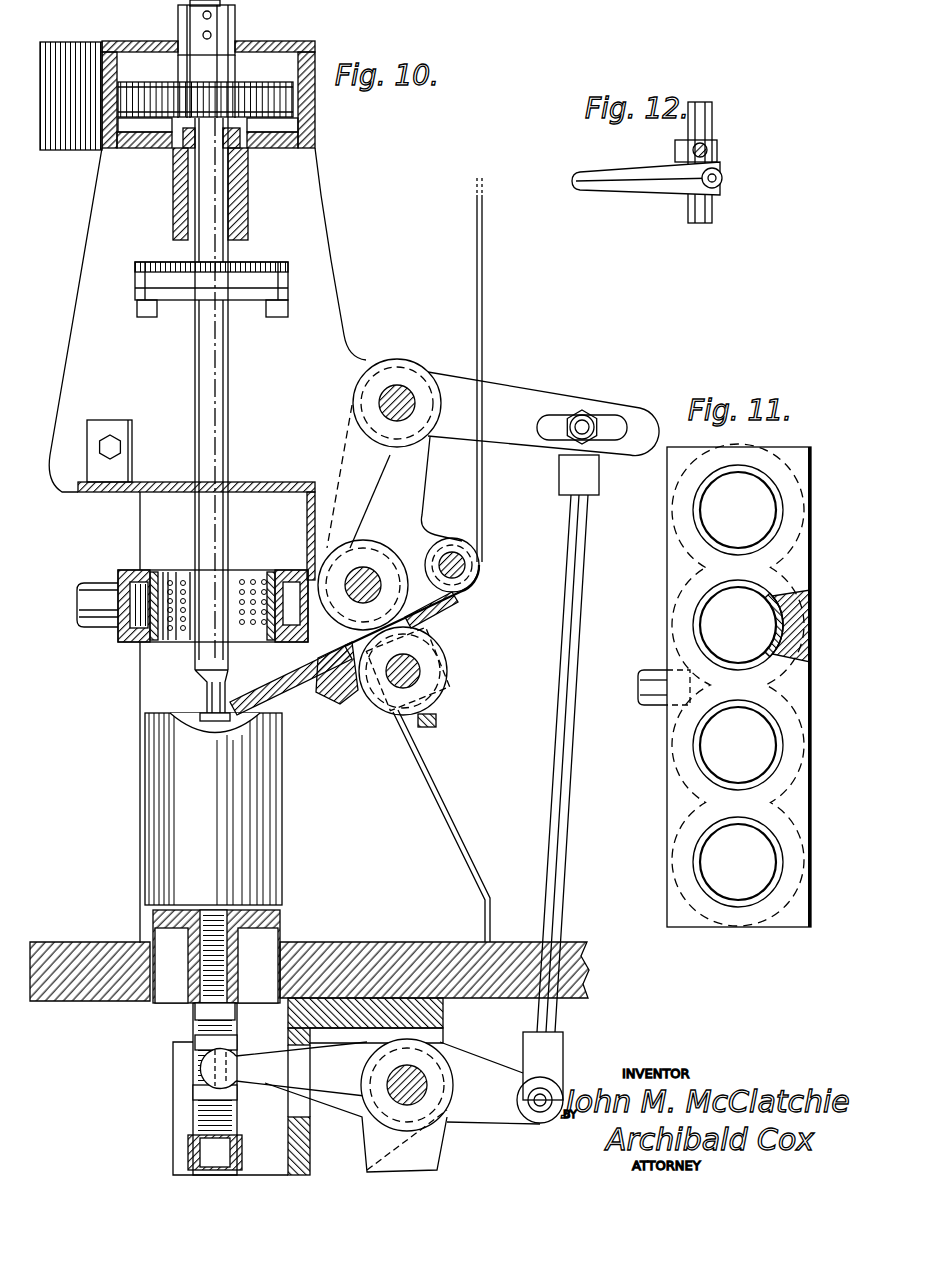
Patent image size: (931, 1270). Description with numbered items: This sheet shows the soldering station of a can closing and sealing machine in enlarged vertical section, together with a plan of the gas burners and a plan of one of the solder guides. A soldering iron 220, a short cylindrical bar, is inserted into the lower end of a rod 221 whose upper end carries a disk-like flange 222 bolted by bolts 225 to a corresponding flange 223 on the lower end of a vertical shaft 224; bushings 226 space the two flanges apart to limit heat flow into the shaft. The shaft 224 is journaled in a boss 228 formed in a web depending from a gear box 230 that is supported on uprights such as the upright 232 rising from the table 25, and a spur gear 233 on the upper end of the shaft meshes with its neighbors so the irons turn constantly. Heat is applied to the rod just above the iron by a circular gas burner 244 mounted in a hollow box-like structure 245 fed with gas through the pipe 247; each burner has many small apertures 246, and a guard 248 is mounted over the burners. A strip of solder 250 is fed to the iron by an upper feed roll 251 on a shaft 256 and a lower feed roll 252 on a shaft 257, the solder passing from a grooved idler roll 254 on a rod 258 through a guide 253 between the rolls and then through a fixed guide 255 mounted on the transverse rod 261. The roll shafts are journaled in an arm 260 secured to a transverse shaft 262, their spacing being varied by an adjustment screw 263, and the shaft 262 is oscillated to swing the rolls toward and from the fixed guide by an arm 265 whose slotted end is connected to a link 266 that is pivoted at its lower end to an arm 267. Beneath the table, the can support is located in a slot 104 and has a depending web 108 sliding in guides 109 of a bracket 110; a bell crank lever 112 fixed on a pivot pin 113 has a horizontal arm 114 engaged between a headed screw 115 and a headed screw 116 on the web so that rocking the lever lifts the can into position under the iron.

In FIG. 10, the spur gear 233 is at (318, 68).
In FIG. 10, the gear box 230 is at (318, 132).
In FIG. 10, the boss 228 is at (242, 197).
In FIG. 10, the shaft 224 is at (208, 208).
In FIG. 10, the flange 223 is at (250, 262).
In FIG. 10, the bushing 226 is at (290, 282).
In FIG. 10, the flange 222 is at (176, 302).
In FIG. 10, the bolt 225 is at (275, 312).
In FIG. 10, the rod 221 is at (212, 440).
In FIG. 10, the guard 248 is at (308, 484).
In FIG. 10, the box-like structure 245 is at (125, 642).
In FIG. 11, the box-like structure 245 is at (697, 928).
In FIG. 10, the gas burner 244 is at (150, 576).
In FIG. 11, the gas burner 244 is at (735, 545).
In FIG. 10, the aperture 246 is at (258, 578).
In FIG. 11, the aperture 246 is at (778, 644).
In FIG. 10, the pipe 247 is at (108, 566).
In FIG. 11, the pipe 247 is at (650, 670).
In FIG. 10, the soldering iron 220 is at (207, 698).
In FIG. 10, the arm 265 is at (513, 398).
In FIG. 10, the shaft 262 is at (410, 392).
In FIG. 10, the arm 260 is at (412, 484).
In FIG. 10, the upper feed roll 251 is at (383, 548).
In FIG. 10, the shaft 256 is at (376, 585).
In FIG. 10, the rod 258 is at (462, 562).
In FIG. 10, the idler roll 254 is at (466, 580).
In FIG. 10, the strip of solder 250 is at (481, 521).
In FIG. 10, the guide 253 is at (440, 618).
In FIG. 10, the lower feed roll 252 is at (445, 696).
In FIG. 10, the shaft 257 is at (415, 668).
In FIG. 10, the adjustment screw 263 is at (432, 726).
In FIG. 10, the fixed guide 255 is at (305, 698).
In FIG. 12, the fixed guide 255 is at (660, 185).
In FIG. 10, the rod 261 is at (350, 708).
In FIG. 12, the rod 261 is at (698, 215).
In FIG. 10, the upright 232 is at (418, 798).
In FIG. 10, the link 266 is at (575, 572).
In FIG. 10, the slot 104 is at (165, 946).
In FIG. 10, the table 25 is at (450, 955).
In FIG. 10, the bracket 110 is at (443, 1033).
In FIG. 10, the guide 109 is at (175, 1063).
In FIG. 10, the web 108 is at (230, 986).
In FIG. 10, the headed screw 115 is at (200, 1040).
In FIG. 10, the headed screw 116 is at (200, 1094).
In FIG. 10, the horizontal arm 114 is at (272, 1068).
In FIG. 10, the bell crank lever 112 is at (412, 1046).
In FIG. 10, the pivot pin 113 is at (443, 1117).
In FIG. 10, the arm 267 is at (494, 1088).